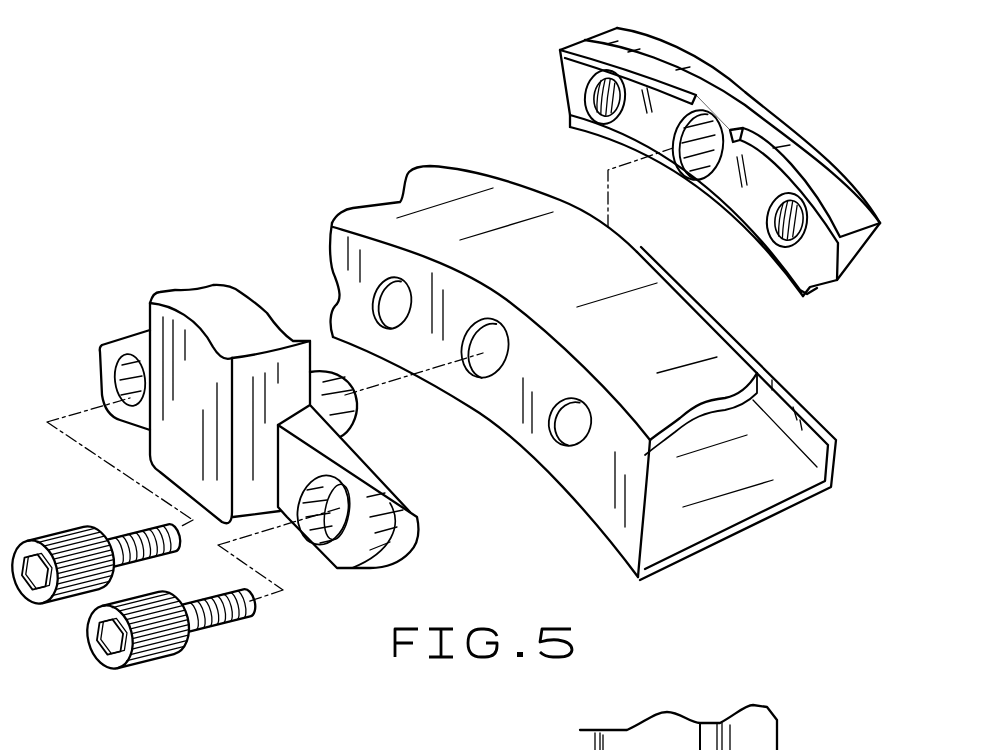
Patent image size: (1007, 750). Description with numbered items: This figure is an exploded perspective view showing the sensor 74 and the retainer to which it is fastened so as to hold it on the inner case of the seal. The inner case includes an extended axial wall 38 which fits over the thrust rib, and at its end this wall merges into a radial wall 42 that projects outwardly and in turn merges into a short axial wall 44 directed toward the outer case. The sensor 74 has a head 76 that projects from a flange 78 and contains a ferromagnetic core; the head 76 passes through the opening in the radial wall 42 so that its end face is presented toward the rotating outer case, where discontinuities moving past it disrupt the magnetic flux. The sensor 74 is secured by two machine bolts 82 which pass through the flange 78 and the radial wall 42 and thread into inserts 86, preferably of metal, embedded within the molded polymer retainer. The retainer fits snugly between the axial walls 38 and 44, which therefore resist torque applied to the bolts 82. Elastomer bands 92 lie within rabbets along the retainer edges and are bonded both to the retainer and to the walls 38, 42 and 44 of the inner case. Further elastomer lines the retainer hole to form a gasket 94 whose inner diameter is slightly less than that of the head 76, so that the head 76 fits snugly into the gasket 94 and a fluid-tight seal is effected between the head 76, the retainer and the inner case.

The extended axial wall 38 is at (717, 550).
The radial wall 42 is at (537, 403).
The short axial wall 44 is at (453, 218).
The sensor 74 is at (180, 363).
The head 76 is at (334, 383).
The flange 78 is at (393, 517).
The machine bolts 82 is at (62, 525).
The inserts 86 is at (585, 77).
The bands 92 is at (580, 44).
The gasket 94 is at (703, 113).